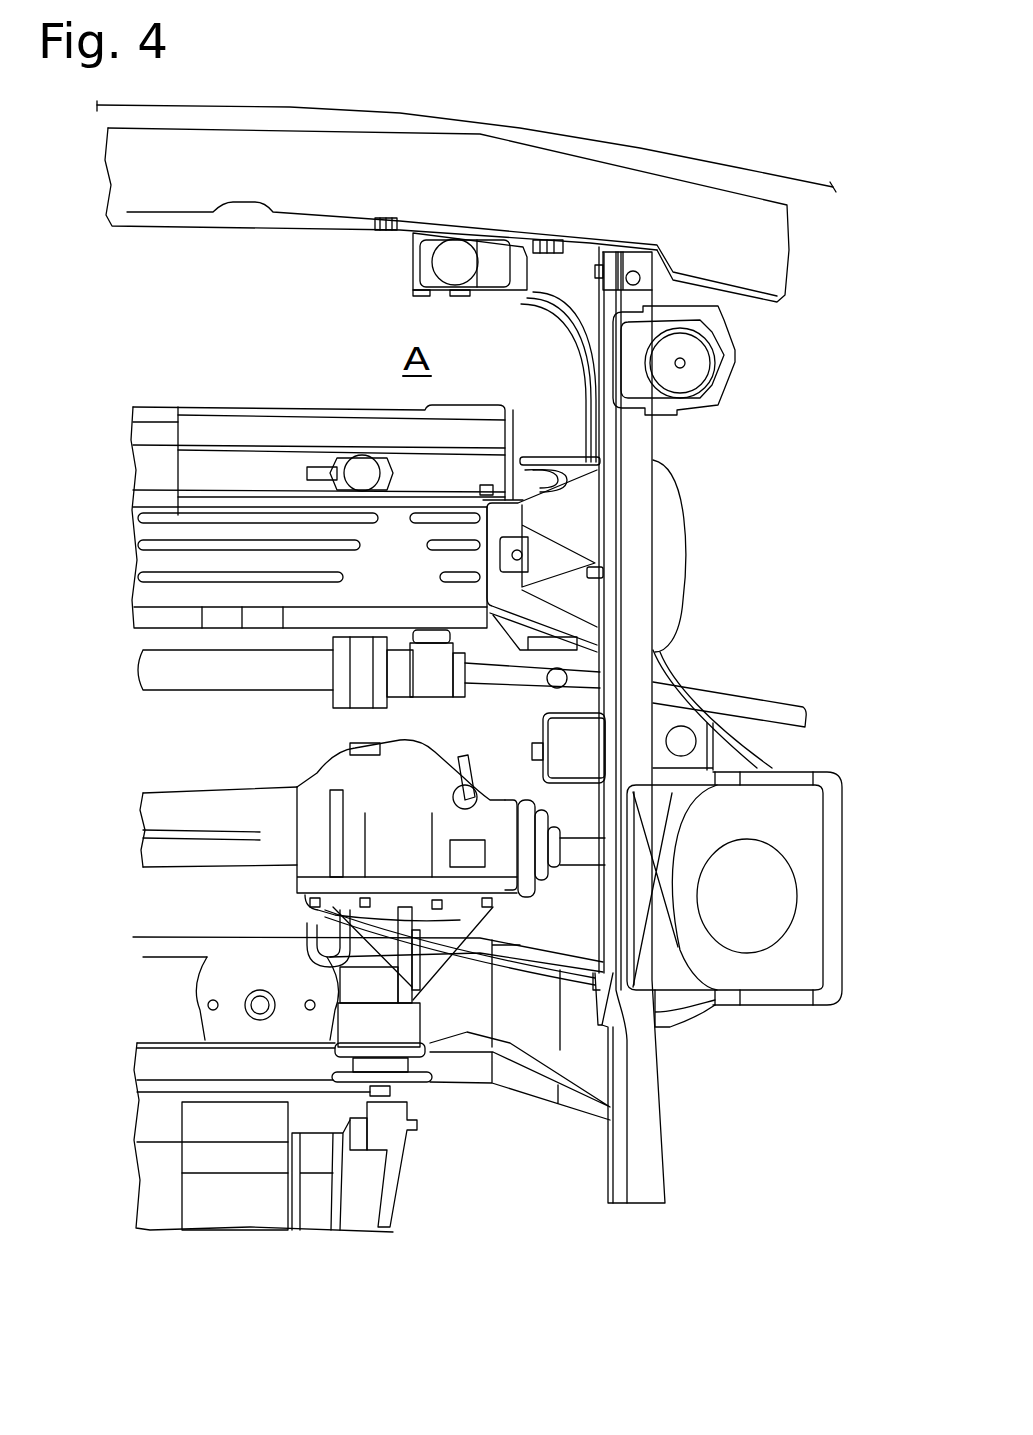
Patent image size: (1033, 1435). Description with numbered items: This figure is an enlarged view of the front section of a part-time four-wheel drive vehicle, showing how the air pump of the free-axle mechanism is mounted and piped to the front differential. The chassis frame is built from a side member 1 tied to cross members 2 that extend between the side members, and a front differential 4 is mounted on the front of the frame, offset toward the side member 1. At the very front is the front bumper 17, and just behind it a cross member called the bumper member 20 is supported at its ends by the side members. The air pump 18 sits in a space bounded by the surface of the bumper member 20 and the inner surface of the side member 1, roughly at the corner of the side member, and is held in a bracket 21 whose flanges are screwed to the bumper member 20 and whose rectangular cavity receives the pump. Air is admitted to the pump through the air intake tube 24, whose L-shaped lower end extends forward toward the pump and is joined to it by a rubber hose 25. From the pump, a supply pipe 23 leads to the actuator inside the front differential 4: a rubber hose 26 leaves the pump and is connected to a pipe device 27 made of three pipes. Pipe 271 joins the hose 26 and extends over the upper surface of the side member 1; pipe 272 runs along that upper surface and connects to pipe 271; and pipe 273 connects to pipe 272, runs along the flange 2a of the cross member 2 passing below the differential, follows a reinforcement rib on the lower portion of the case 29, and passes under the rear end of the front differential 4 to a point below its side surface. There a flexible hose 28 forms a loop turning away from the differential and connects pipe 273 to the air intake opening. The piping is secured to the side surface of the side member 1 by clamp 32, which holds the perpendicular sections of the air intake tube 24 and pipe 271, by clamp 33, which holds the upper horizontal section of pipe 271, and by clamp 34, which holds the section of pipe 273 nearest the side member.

The side member 1 is at (630, 467).
The cross member 2 is at (552, 1048).
The flange 2a is at (523, 957).
The front differential 4 is at (324, 782).
The front bumper 17 is at (560, 131).
The air pump 18 is at (441, 267).
The bumper member 20 is at (383, 132).
The bracket 21 is at (486, 293).
The supply pipe 23 is at (613, 543).
The air intake tube 24 is at (570, 457).
The rubber hose 25 is at (598, 272).
The rubber hose 26 is at (553, 318).
The pipe device 27 is at (602, 618).
The pipe 271 is at (613, 503).
The pipe 272 is at (640, 778).
The pipe 273 is at (523, 950).
The flexible hose 28 is at (333, 935).
The case 29 is at (427, 777).
The clamp 32 is at (652, 440).
The clamp 33 is at (603, 572).
The clamp 34 is at (627, 993).